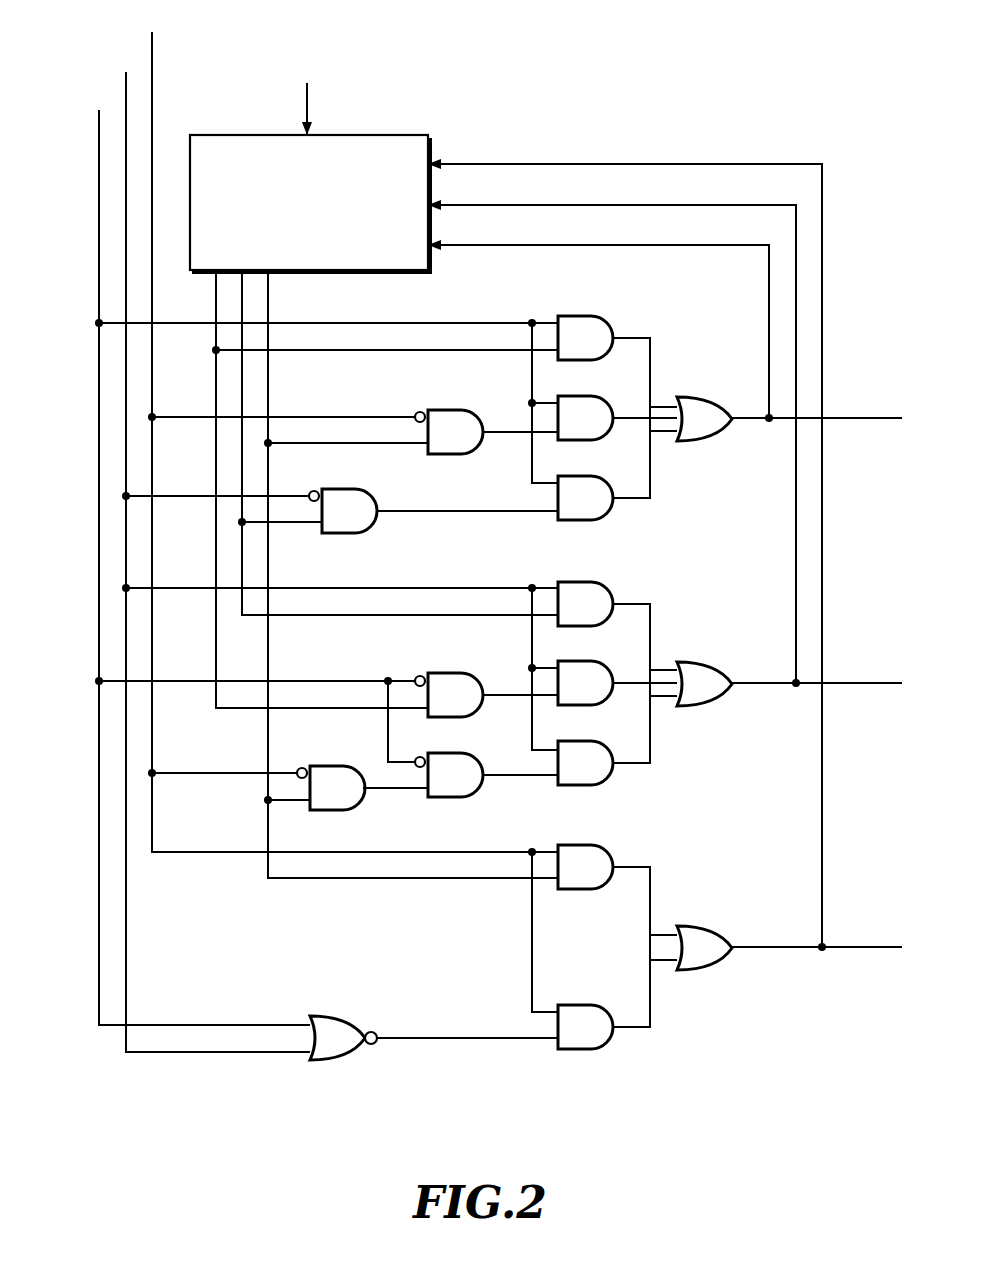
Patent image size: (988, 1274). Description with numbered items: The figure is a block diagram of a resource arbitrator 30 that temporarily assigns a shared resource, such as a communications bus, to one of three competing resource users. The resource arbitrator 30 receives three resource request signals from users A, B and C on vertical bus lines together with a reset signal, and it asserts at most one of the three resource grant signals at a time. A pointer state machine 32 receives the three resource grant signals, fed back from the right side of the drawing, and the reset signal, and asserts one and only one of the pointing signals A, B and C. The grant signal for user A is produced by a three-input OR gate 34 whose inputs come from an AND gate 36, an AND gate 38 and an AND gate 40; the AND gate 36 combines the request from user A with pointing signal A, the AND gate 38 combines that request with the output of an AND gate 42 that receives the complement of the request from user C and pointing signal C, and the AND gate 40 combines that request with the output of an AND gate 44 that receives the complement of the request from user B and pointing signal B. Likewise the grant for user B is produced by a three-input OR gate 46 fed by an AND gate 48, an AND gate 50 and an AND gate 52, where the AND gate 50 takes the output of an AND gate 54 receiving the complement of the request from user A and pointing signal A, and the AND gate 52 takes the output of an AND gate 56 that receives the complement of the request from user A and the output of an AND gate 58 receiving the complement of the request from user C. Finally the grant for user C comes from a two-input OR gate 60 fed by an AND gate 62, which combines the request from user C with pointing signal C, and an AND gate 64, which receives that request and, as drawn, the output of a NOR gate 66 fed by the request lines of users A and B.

The resource arbitrator 30 is at (441, 1148).
The pointer state machine 32 is at (376, 259).
The three-input OR gate 34 is at (692, 431).
The AND gate 36 is at (571, 350).
The AND gate 38 is at (571, 430).
The AND gate 40 is at (571, 510).
The AND gate 42 is at (441, 444).
The AND gate 44 is at (335, 523).
The three-input OR gate 46 is at (692, 696).
The AND gate 48 is at (571, 616).
The AND gate 50 is at (571, 695).
The AND gate 52 is at (571, 775).
The AND gate 54 is at (441, 707).
The AND gate 56 is at (441, 787).
The AND gate 58 is at (323, 800).
The two-input OR gate 60 is at (692, 960).
The AND gate 62 is at (571, 879).
The AND gate 64 is at (571, 1039).
The NOR gate 66 is at (325, 1050).